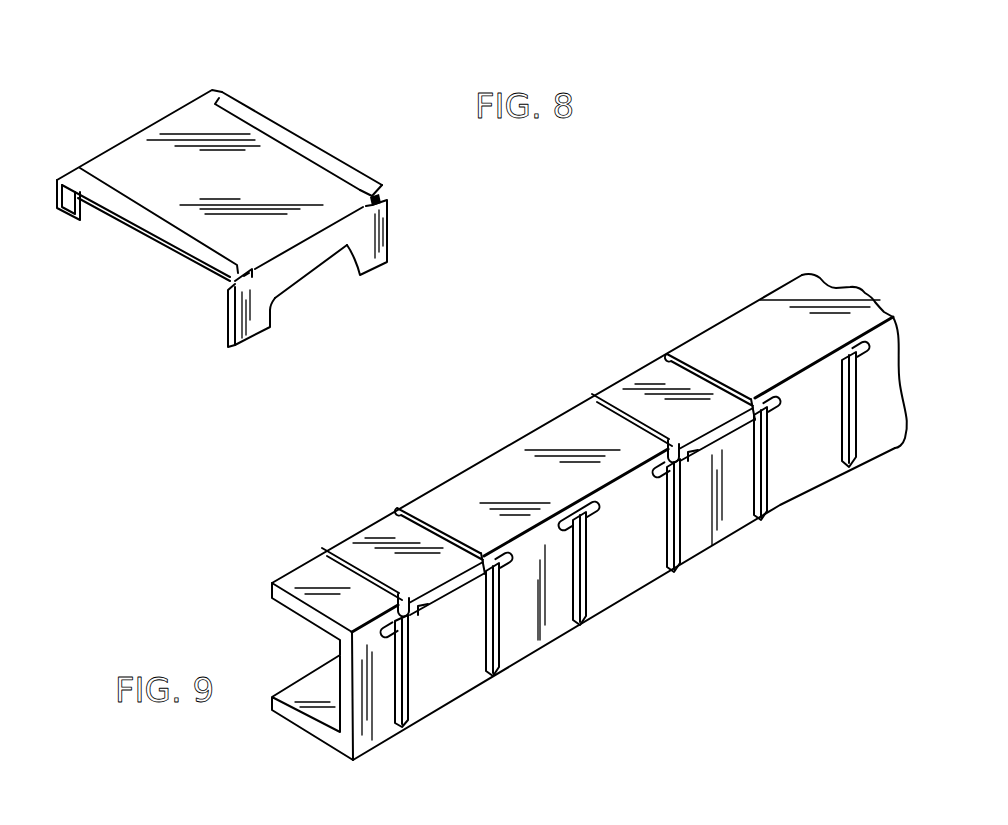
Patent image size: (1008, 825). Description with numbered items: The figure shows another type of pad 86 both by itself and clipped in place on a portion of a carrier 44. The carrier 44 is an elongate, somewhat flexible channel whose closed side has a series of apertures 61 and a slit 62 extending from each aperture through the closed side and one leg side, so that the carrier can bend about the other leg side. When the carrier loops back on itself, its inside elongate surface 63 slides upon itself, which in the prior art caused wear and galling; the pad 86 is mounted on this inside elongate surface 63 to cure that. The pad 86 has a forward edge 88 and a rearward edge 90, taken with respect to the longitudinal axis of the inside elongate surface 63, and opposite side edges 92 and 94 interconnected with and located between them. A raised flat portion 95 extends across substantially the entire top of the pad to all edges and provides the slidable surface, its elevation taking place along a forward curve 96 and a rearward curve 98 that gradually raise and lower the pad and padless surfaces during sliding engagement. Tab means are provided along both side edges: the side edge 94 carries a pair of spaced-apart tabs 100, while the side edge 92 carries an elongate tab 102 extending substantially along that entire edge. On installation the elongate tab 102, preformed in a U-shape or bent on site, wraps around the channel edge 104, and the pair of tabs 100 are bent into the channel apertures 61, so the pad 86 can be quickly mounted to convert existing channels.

In FIG. 9, the carrier 44 is at (724, 588).
In FIG. 9, the apertures 61 is at (828, 367).
In FIG. 9, the slit 62 is at (497, 645).
In FIG. 9, the inside elongate surface 63 is at (483, 463).
In FIG. 8, the pad 86 is at (140, 80).
In FIG. 9, the pad 86 is at (359, 522).
In FIG. 8, the forward edge 88 is at (136, 230).
In FIG. 8, the rearward edge 90 is at (288, 130).
In FIG. 8, the side edge 92 is at (115, 146).
In FIG. 8, the side edge 94 is at (317, 257).
In FIG. 8, the raised flat portion 95 is at (187, 120).
In FIG. 8, the forward curve 96 is at (194, 245).
In FIG. 8, the rearward curve 98 is at (348, 162).
In FIG. 8, the tabs 100 is at (392, 245).
In FIG. 9, the tabs 100 is at (478, 583).
In FIG. 8, the elongate tab 102 is at (86, 212).
In FIG. 9, the channel edge 104 is at (270, 582).